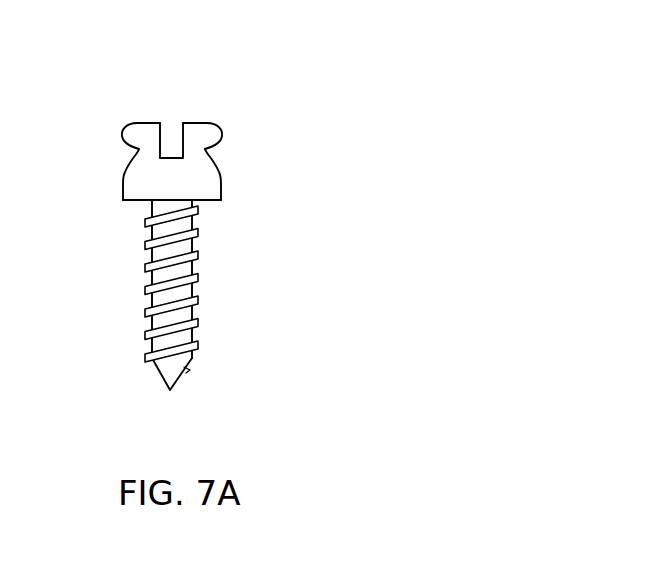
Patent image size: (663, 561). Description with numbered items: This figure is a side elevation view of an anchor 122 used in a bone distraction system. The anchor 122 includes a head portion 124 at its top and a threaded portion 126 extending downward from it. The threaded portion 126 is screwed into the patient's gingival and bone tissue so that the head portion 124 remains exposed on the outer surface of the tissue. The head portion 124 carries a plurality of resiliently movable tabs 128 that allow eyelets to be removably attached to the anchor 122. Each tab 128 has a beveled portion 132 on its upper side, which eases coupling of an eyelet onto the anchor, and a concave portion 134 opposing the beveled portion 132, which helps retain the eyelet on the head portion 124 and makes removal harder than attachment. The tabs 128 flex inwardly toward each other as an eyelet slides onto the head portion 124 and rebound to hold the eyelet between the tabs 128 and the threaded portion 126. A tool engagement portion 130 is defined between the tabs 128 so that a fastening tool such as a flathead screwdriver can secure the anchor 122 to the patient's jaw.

The anchor 122 is at (191, 212).
The head portion 124 is at (185, 146).
The threaded portion 126 is at (147, 325).
The resiliently movable tabs 128 is at (189, 116).
The tool engagement portion 130 is at (168, 136).
The beveled portion 132 is at (220, 133).
The concave portion 134 is at (208, 140).